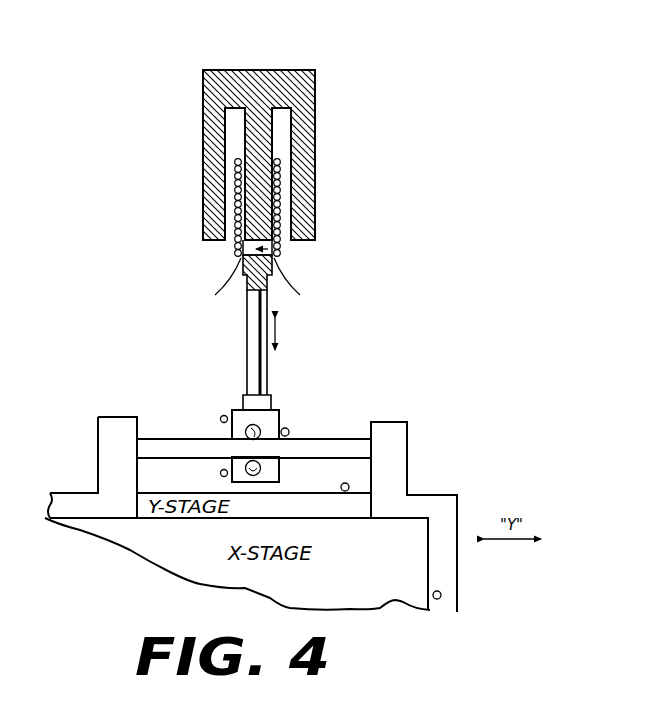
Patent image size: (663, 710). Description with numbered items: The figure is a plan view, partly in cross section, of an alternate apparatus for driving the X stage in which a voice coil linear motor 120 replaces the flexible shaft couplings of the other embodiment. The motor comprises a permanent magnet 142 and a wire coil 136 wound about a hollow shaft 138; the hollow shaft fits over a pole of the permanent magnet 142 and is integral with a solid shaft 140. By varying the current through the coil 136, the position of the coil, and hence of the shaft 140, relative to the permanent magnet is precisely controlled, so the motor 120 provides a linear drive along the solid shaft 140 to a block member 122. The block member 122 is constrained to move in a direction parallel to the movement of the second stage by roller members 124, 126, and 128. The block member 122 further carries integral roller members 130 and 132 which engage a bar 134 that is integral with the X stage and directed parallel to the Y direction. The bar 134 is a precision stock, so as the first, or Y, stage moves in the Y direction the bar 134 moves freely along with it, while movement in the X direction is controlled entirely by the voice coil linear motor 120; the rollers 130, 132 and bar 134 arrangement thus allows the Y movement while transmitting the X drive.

The voice coil linear motor 120 is at (200, 137).
The permanent magnet 142 is at (270, 70).
The wire coil 136 is at (234, 247).
The hollow shaft 138 is at (280, 257).
The solid shaft 140 is at (250, 328).
The block member 122 is at (281, 416).
The roller member 124 is at (290, 433).
The roller member 126 is at (221, 418).
The roller member 128 is at (221, 474).
The roller member 130 is at (245, 432).
The roller member 132 is at (256, 477).
The bar 134 is at (302, 452).